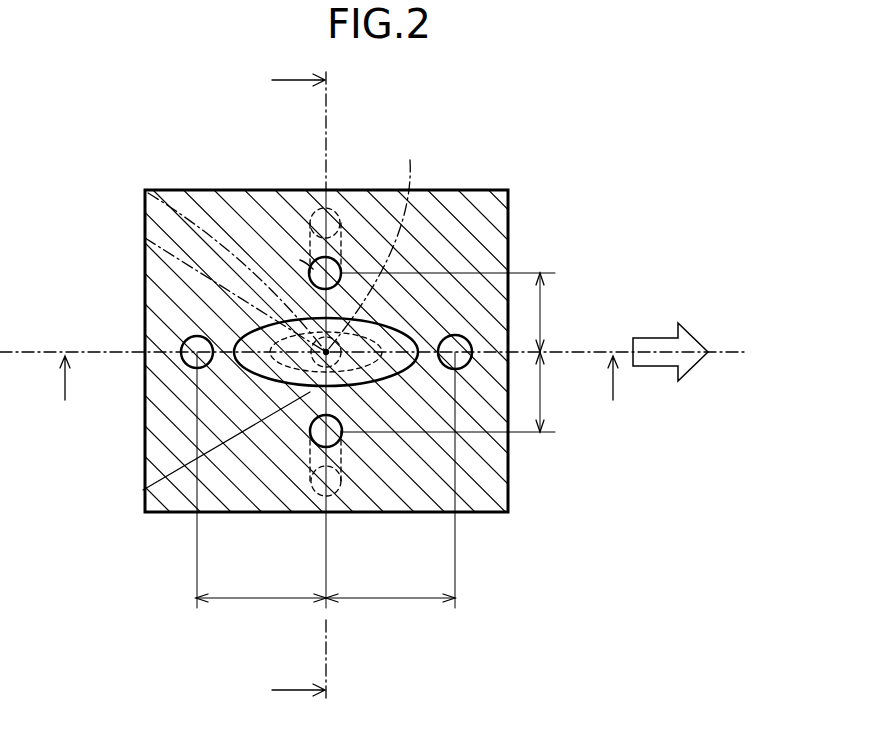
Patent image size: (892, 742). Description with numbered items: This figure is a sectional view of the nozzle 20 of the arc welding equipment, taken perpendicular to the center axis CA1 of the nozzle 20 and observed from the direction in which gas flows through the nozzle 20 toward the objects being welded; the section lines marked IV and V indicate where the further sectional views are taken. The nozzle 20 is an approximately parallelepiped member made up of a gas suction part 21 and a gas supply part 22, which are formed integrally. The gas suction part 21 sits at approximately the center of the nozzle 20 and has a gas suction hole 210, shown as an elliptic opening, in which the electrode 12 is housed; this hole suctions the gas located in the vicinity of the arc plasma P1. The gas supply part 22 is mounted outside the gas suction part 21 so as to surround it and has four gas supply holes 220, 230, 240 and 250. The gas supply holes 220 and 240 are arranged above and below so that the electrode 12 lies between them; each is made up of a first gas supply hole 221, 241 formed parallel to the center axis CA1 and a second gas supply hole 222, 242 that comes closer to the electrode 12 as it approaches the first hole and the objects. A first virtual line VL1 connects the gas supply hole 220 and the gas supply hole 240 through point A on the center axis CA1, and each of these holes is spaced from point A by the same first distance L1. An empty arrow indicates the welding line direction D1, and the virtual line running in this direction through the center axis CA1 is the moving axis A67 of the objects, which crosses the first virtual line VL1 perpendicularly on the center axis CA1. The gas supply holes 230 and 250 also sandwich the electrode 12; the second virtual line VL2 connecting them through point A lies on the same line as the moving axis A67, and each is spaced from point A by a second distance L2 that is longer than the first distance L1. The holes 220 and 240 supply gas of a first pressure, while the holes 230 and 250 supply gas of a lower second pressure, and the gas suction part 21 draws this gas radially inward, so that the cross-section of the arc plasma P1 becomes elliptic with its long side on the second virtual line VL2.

The nozzle 20 is at (520, 504).
The gas suction part 21 is at (143, 490).
The gas supply part 22 is at (190, 496).
The electrode 12 is at (280, 372).
The gas suction hole 210 is at (248, 335).
The gas supply hole 220 is at (315, 199).
The first gas supply hole 221 is at (343, 222).
The second gas supply hole 222 is at (313, 268).
The gas supply hole 230 is at (455, 335).
The gas supply hole 240 is at (320, 508).
The first gas supply hole 241 is at (345, 488).
The second gas supply hole 242 is at (310, 432).
The gas supply hole 250 is at (181, 352).
The arc plasma P1 is at (320, 355).
The center axis CA1 is at (148, 193).
The first virtual line VL1 is at (377, 247).
The second virtual line VL2 is at (145, 238).
The first distance L1 is at (540, 295).
The second distance L2 is at (226, 600).
The welding line direction D1 is at (690, 368).
The moving axis A67 is at (733, 352).
The section IV is at (288, 385).
The section V is at (338, 391).